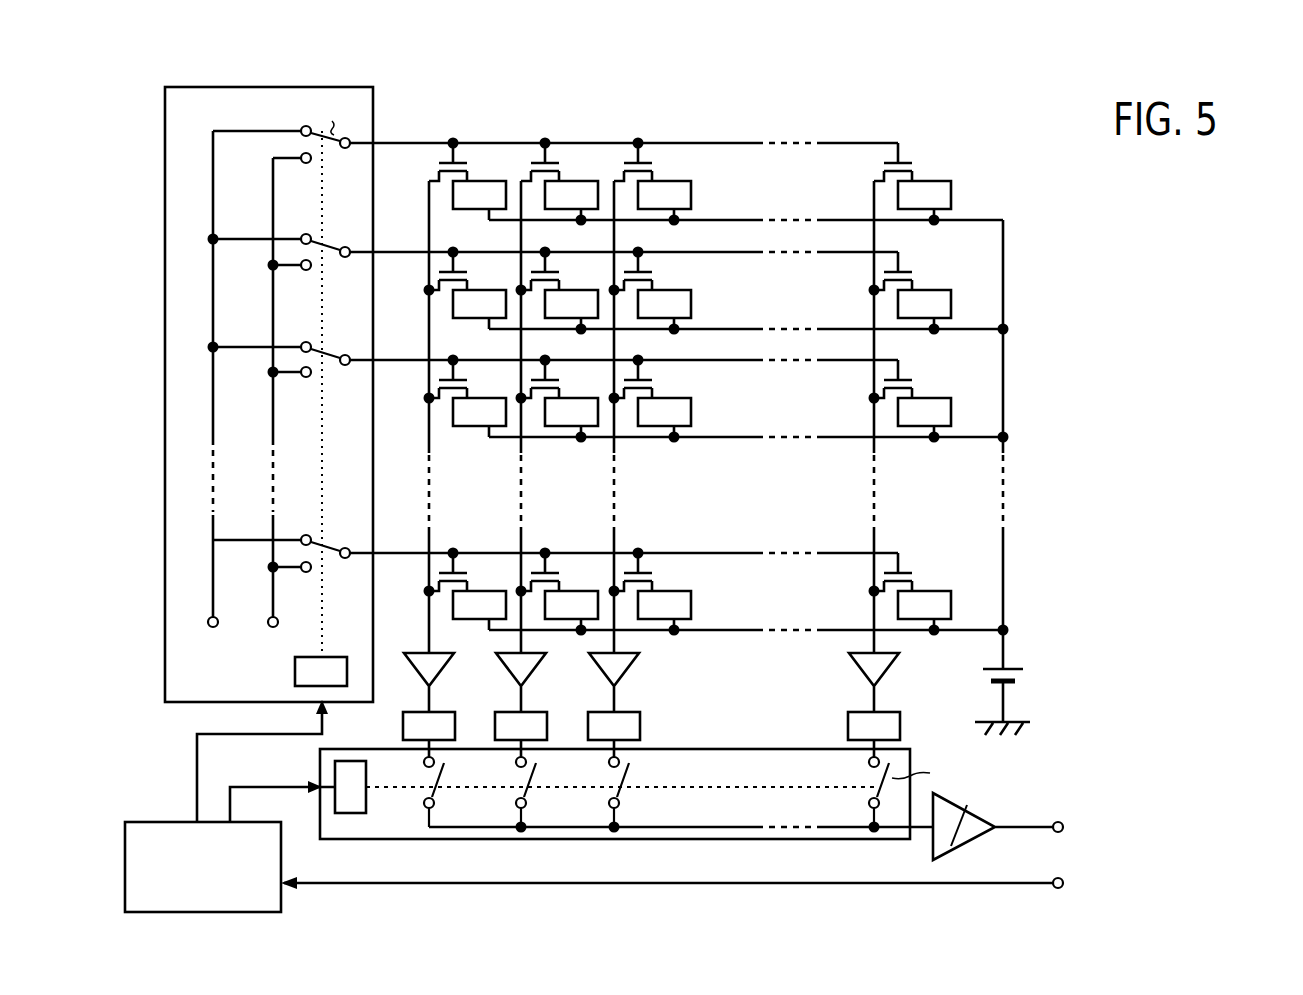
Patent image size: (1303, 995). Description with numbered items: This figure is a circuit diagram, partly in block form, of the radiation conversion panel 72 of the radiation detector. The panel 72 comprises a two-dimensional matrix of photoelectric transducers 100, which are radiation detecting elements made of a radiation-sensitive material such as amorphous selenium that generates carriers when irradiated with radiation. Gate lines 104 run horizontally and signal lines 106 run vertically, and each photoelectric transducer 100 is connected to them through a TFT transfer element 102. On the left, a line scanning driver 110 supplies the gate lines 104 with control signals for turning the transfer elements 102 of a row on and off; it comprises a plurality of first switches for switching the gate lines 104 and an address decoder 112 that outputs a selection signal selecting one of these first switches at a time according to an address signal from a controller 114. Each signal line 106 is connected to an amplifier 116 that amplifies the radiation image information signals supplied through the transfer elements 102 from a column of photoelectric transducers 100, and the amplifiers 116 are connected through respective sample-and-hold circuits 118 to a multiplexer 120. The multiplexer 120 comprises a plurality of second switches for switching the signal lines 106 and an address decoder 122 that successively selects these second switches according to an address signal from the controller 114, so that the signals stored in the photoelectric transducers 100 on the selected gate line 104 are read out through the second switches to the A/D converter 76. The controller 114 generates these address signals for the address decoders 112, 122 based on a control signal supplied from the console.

The radiation conversion panel 72 is at (889, 113).
The A/D converter 76 is at (975, 840).
The photoelectric transducer 100 is at (692, 190).
The TFT transfer element 102 is at (653, 165).
The gate line 104 is at (845, 132).
The signal line 106 is at (873, 198).
The line scanning driver 110 is at (165, 130).
The address decoder 112 is at (295, 672).
The controller 114 is at (281, 852).
The amplifier 116 is at (630, 668).
The sample-and-hold circuit 118 is at (641, 727).
The multiplexer 120 is at (646, 816).
The address decoder 122 is at (366, 800).